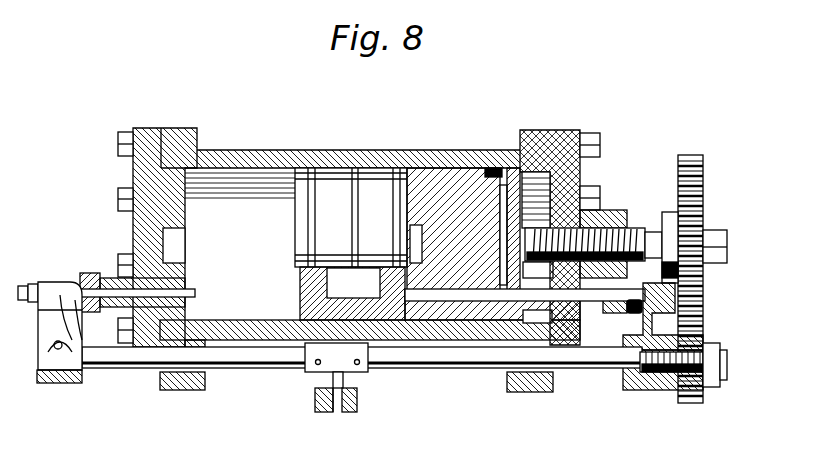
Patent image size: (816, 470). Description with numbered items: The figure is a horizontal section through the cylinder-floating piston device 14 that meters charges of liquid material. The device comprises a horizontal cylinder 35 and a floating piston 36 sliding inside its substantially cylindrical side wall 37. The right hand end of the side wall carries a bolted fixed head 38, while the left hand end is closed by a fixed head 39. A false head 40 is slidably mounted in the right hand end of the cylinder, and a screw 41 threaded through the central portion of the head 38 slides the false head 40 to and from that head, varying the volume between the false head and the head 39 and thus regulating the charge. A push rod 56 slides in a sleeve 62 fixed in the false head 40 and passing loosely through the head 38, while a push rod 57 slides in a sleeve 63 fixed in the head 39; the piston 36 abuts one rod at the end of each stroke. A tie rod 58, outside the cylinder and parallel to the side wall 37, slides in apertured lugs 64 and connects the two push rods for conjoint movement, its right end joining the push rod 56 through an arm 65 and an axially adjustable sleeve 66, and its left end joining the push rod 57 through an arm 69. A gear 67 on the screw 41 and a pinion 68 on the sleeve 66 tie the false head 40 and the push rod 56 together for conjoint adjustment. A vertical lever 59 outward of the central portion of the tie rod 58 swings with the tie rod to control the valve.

The cylinder-floating piston device 14 is at (248, 150).
The cylinder 35 is at (341, 151).
The floating piston 36 is at (300, 243).
The cylindrical side wall 37 is at (395, 160).
The fixed circular head 38 is at (576, 137).
The fixed circular head 39 is at (185, 217).
The false head 40 is at (458, 178).
The screw 41 is at (628, 240).
The push rod 56 is at (460, 301).
The push rod 57 is at (197, 295).
The tie rod 58 is at (480, 370).
The lever 59 is at (357, 403).
The sleeve 62 is at (594, 304).
The sleeve 63 is at (112, 280).
The apertured lugs 64 is at (185, 390).
The arm 65 is at (663, 390).
The axially adjustable sleeve 66 is at (635, 386).
The gear 67 is at (703, 208).
The pinion 68 is at (703, 332).
The arm 69 is at (45, 322).